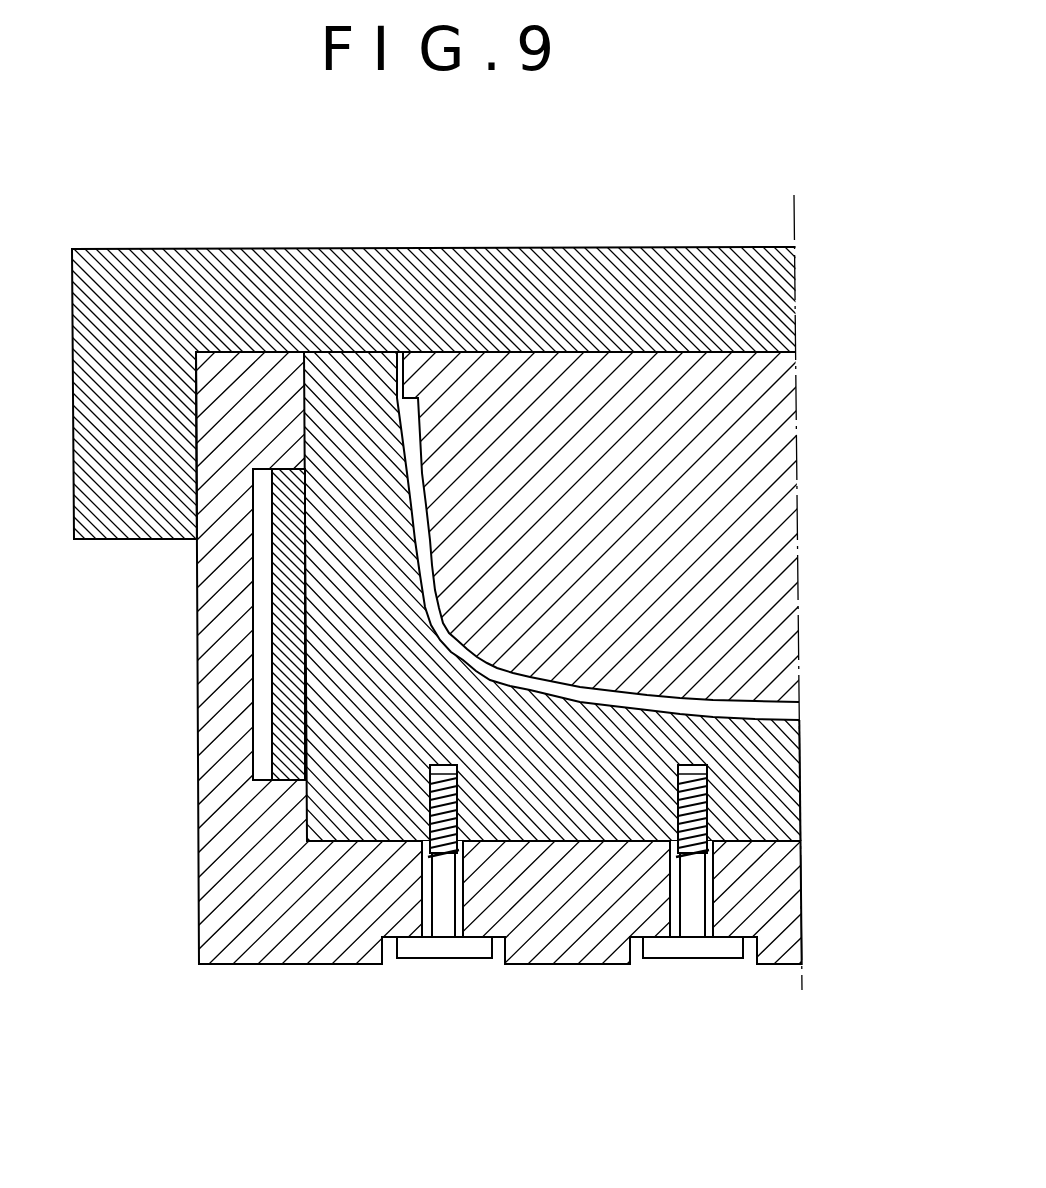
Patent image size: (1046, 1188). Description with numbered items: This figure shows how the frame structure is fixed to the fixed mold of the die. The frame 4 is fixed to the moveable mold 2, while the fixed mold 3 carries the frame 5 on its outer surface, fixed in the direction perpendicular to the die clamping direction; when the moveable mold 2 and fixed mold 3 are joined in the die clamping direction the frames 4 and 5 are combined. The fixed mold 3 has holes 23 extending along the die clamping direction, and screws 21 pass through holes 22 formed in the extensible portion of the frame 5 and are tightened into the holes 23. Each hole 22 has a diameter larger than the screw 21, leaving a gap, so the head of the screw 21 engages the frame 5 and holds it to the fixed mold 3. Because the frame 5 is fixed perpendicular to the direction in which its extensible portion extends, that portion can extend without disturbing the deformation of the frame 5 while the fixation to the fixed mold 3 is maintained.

The moveable mold 2 is at (757, 460).
The fixed mold 3 is at (761, 745).
The frame 4 is at (323, 289).
The frame 5 is at (228, 718).
The screw 21 is at (445, 947).
The hole 22 is at (672, 897).
The hole 23 is at (437, 764).